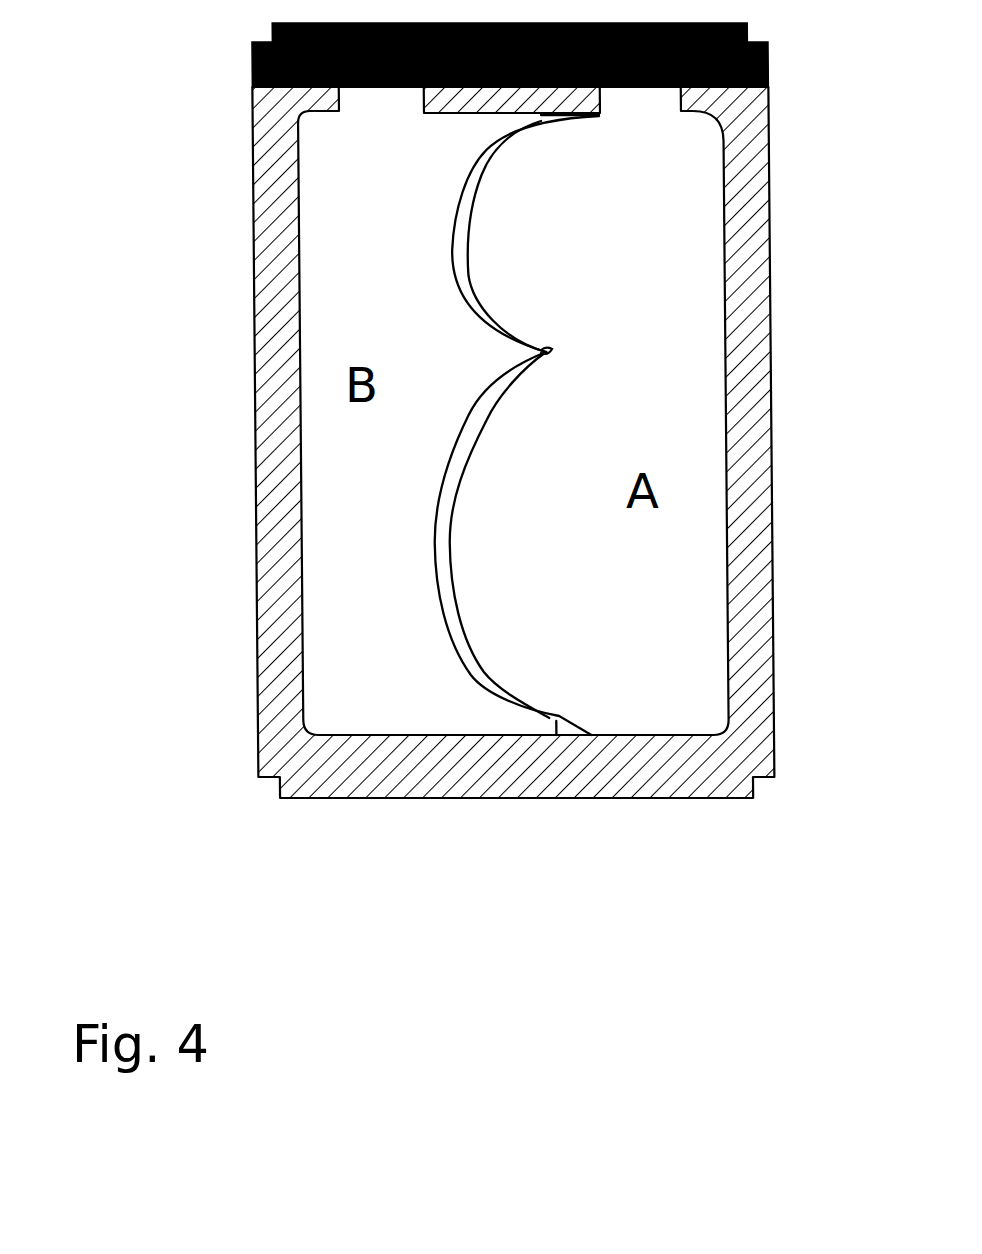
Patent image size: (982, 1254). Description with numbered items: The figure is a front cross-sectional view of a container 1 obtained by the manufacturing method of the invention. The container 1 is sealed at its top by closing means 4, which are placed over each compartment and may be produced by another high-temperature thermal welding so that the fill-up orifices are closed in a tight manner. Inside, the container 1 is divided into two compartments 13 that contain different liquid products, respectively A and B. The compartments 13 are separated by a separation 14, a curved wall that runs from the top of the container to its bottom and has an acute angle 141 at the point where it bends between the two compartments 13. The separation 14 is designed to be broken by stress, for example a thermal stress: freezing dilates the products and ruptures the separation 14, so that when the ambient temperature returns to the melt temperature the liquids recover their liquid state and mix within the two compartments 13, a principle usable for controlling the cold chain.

The container 1 is at (777, 216).
The closing means 4 is at (752, 42).
The compartments 13 is at (385, 513).
The separation 14 is at (473, 294).
The acute angle 141 is at (549, 350).